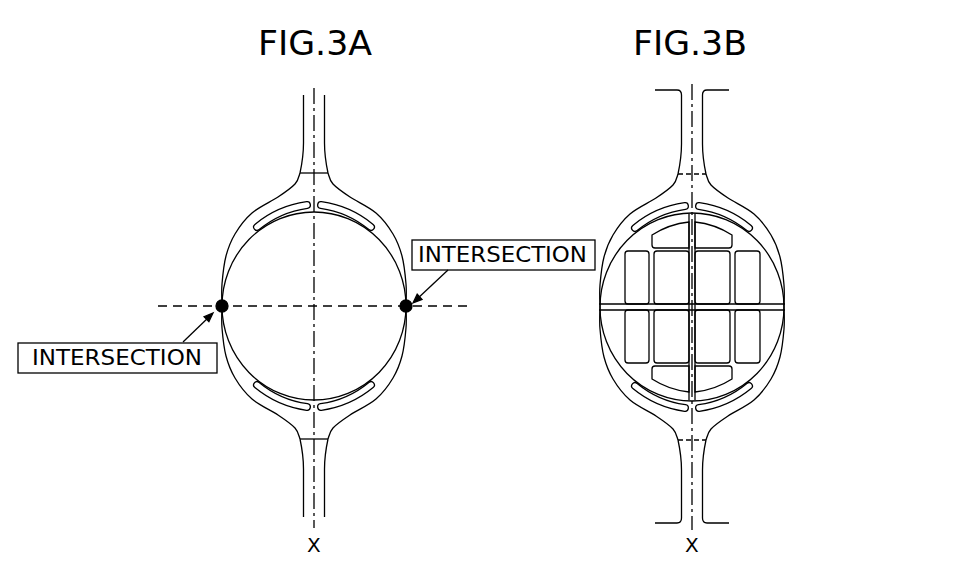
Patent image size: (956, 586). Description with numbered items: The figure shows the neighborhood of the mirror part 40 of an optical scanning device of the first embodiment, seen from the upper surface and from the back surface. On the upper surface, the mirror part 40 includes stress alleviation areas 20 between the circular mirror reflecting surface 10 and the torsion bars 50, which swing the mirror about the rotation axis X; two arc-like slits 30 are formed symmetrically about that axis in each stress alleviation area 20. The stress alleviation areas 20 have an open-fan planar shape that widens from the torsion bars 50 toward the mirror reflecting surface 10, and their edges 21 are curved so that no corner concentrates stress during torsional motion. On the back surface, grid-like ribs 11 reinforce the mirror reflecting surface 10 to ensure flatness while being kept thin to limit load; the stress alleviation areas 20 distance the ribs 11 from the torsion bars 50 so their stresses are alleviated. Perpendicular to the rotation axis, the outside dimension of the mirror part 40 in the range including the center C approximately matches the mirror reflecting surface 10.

In FIG. 3A, the mirror reflecting surface 10 is at (295, 280).
In FIG. 3B, the ribs 11 is at (637, 368).
In FIG. 3A, the stress alleviation areas 20 is at (303, 192).
In FIG. 3B, the stress alleviation areas 20 is at (685, 429).
In FIG. 3A, the edges 21 is at (268, 408).
In FIG. 3B, the edges 21 is at (647, 407).
In FIG. 3A, the arc-like slits 30 is at (283, 214).
In FIG. 3B, the arc-like slits 30 is at (722, 402).
In FIG. 3A, the mirror part 40 is at (152, 175).
In FIG. 3A, the torsion bars 50 is at (304, 128).
In FIG. 3B, the center of the mirror reflecting surface C is at (695, 306).